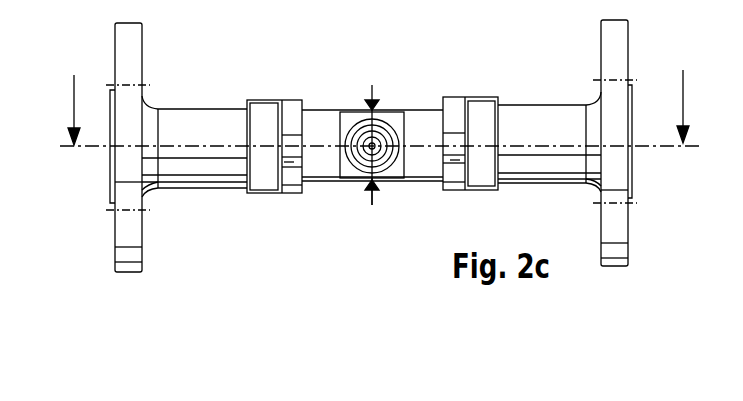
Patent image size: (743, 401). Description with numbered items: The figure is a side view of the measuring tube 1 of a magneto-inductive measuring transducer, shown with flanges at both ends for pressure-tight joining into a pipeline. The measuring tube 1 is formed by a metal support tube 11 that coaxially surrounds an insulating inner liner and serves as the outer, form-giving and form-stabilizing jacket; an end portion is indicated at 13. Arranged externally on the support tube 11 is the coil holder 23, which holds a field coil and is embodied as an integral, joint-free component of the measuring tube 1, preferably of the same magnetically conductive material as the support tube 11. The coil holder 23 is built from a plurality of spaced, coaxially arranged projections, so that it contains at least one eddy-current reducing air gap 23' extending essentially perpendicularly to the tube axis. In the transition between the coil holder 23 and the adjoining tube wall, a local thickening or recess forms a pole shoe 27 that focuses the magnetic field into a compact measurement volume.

The measuring tube 1 is at (380, 146).
The support tube 11 is at (200, 122).
The outlet flange 13 is at (632, 95).
The coil holder 23 is at (363, 125).
The air gap 23' is at (429, 98).
The pole shoe 27 is at (349, 178).